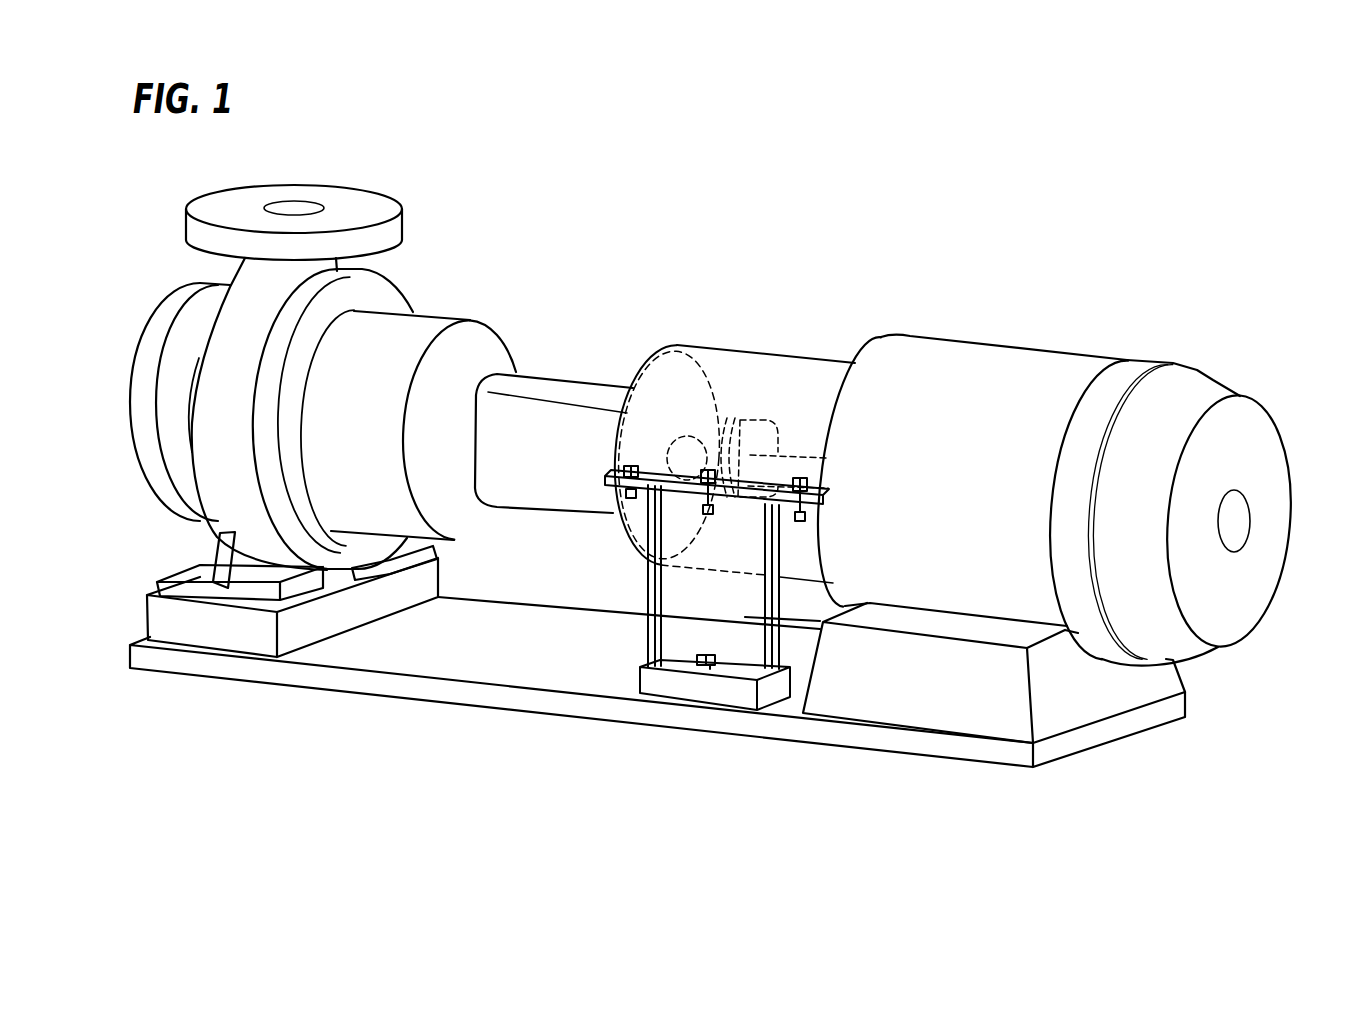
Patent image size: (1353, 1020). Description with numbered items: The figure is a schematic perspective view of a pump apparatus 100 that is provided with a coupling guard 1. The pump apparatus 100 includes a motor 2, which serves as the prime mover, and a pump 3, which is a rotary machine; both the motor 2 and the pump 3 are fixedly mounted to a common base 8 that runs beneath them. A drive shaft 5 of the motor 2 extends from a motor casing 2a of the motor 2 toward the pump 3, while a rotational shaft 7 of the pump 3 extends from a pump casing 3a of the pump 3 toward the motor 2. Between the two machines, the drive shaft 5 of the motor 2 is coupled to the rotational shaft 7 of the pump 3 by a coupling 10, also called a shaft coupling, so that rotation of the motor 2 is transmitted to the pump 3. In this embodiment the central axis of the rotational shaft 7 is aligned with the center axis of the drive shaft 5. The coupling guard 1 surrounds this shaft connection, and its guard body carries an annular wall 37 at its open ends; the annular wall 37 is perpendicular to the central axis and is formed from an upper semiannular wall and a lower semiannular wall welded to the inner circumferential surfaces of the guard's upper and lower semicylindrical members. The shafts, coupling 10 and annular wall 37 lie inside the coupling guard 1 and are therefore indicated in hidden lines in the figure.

The pump apparatus 100 is at (597, 243).
The coupling guard 1 is at (775, 240).
The motor 2 is at (1060, 345).
The motor casing 2a is at (968, 333).
The pump 3 is at (389, 276).
The pump casing 3a is at (487, 323).
The drive shaft 5 is at (792, 377).
The rotational shaft 7 is at (670, 347).
The base 8 is at (427, 687).
The coupling 10 is at (757, 380).
The annular wall 37 is at (707, 357).